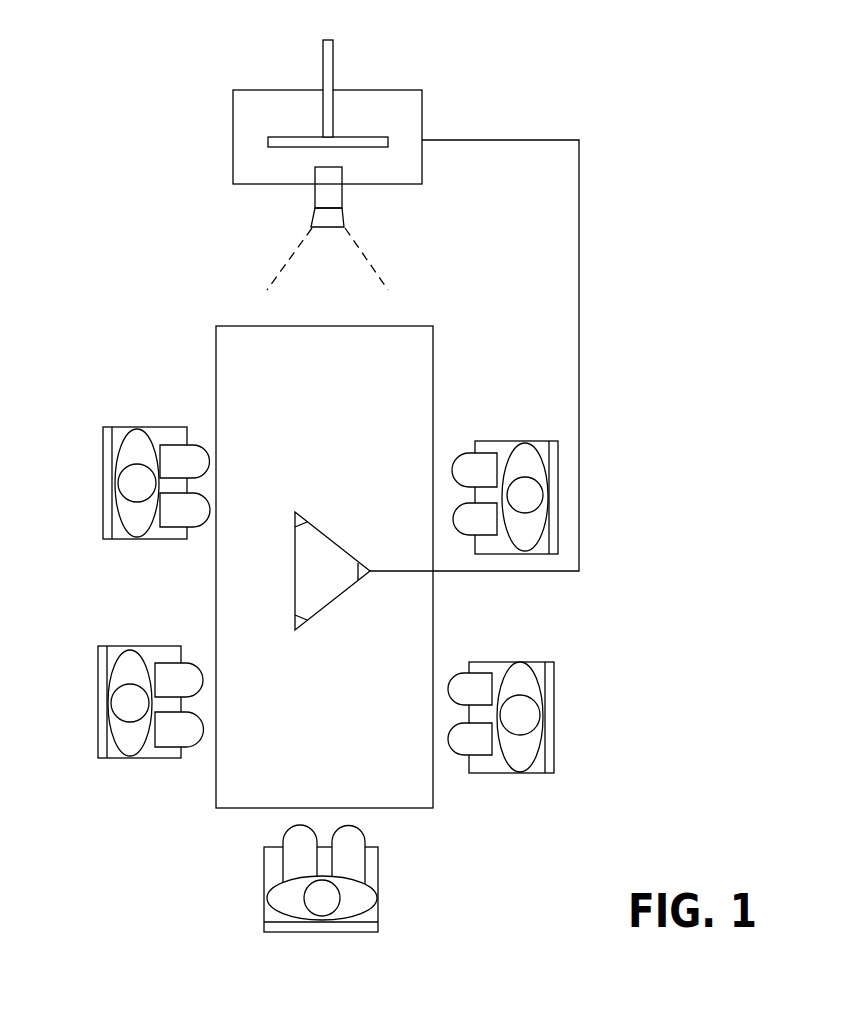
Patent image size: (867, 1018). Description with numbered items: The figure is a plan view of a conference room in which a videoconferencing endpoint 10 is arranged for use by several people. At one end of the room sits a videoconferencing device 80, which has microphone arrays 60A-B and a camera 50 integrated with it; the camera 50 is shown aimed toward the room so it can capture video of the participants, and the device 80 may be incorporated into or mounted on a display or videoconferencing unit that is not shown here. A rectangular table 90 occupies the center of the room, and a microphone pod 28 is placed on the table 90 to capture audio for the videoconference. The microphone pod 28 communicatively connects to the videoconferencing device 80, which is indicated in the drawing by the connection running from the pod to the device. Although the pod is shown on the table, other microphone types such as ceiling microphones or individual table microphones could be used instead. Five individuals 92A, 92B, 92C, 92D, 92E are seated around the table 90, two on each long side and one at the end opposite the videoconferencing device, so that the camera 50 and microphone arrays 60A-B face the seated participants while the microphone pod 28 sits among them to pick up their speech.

The videoconferencing endpoint 10 is at (607, 118).
The videoconferencing device 80 is at (260, 90).
The microphone arrays 60A-B is at (334, 47).
The camera 50 is at (313, 197).
The table 90 is at (233, 812).
The microphone pod 28 is at (329, 605).
The individual 92A is at (503, 441).
The individual 92B is at (552, 700).
The individual 92C is at (293, 933).
The individual 92D is at (120, 760).
The individual 92E is at (102, 478).